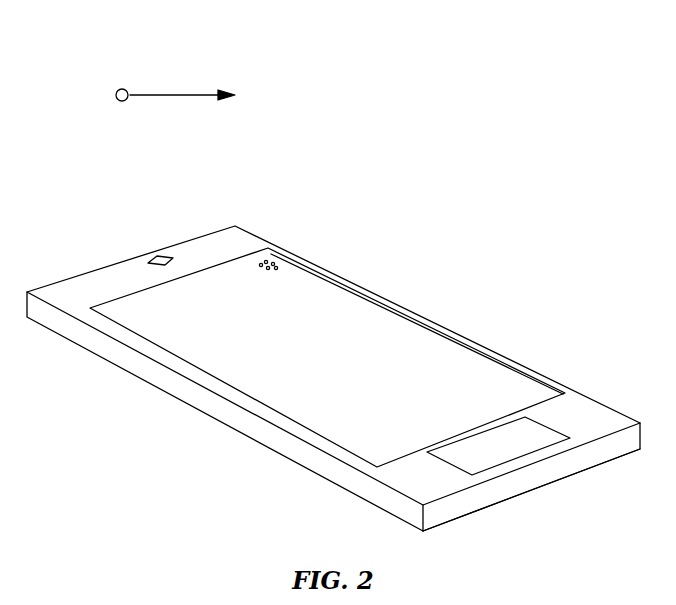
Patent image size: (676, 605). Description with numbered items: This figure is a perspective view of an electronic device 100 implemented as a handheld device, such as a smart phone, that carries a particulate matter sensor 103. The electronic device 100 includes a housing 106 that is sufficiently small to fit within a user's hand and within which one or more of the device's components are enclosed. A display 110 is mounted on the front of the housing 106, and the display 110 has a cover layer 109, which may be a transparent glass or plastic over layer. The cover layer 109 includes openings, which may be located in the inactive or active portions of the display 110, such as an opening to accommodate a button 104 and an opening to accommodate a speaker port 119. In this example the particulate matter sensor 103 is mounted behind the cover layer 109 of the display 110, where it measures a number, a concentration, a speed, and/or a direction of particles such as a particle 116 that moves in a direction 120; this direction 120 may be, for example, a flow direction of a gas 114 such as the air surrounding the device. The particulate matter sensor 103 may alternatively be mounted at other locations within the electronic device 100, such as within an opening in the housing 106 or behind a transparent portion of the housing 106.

The electronic device 100 is at (600, 150).
The particulate matter sensor 103 is at (265, 256).
The button 104 is at (510, 443).
The housing 106 is at (603, 453).
The cover layer 109 is at (405, 348).
The display 110 is at (331, 295).
The gas 114 is at (407, 203).
The particle 116 is at (122, 89).
The speaker port 119 is at (157, 253).
The direction 120 is at (183, 93).